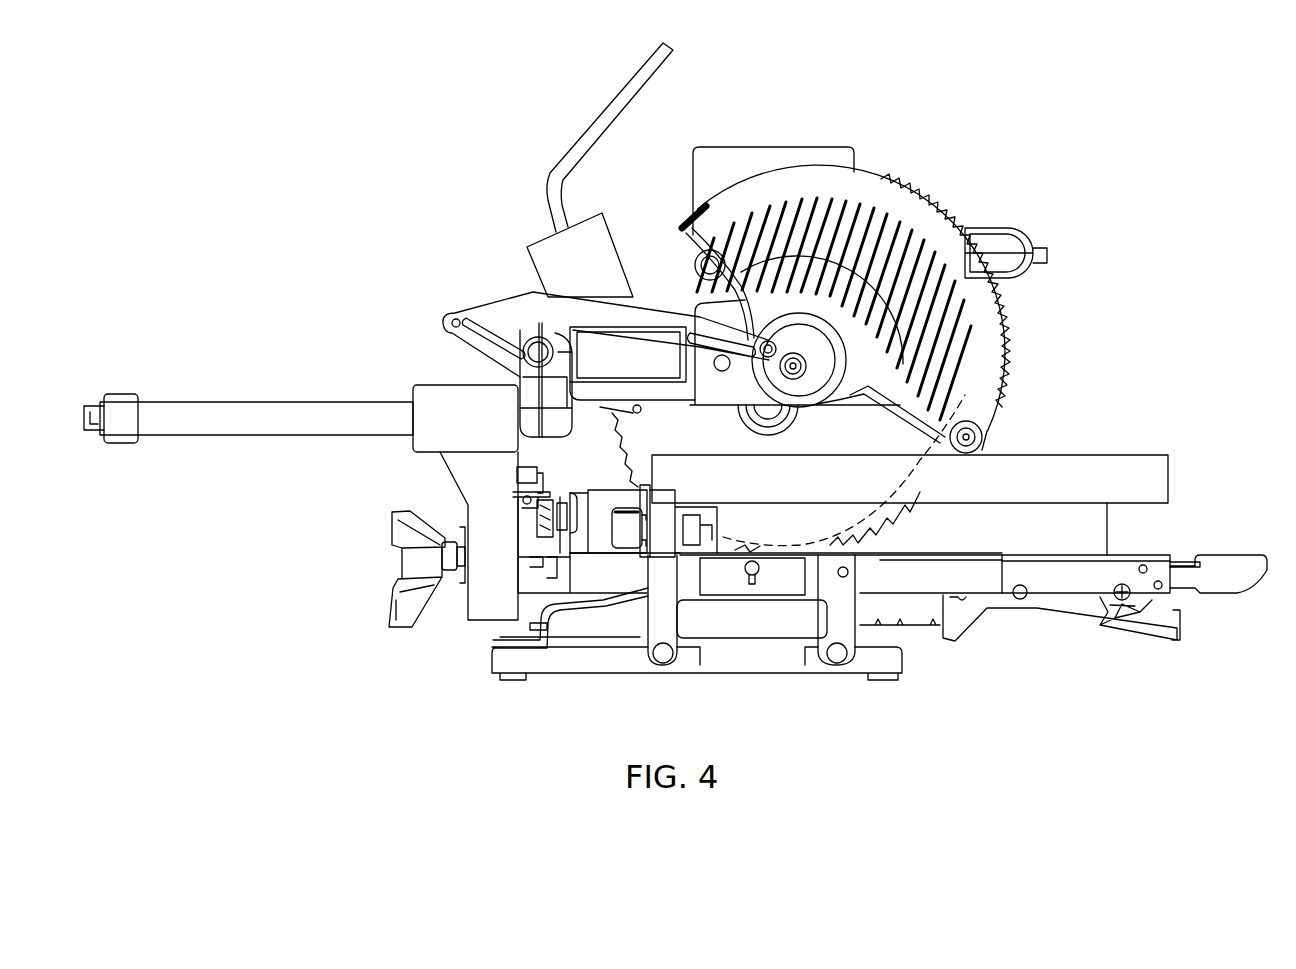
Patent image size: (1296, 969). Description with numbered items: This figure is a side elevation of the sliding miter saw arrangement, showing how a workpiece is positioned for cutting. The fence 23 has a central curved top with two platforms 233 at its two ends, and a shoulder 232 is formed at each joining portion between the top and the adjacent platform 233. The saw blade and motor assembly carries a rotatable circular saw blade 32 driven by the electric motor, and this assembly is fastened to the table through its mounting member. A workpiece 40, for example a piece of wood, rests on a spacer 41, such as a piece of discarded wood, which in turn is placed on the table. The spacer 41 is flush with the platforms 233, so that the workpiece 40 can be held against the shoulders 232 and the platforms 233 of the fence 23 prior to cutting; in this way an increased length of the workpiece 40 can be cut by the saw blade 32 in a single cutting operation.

The fence 23 is at (603, 500).
The shoulder 232 is at (668, 517).
The platform 233 is at (600, 400).
The circular saw blade 32 is at (863, 432).
The workpiece 40 is at (1055, 484).
The spacer 41 is at (1077, 533).